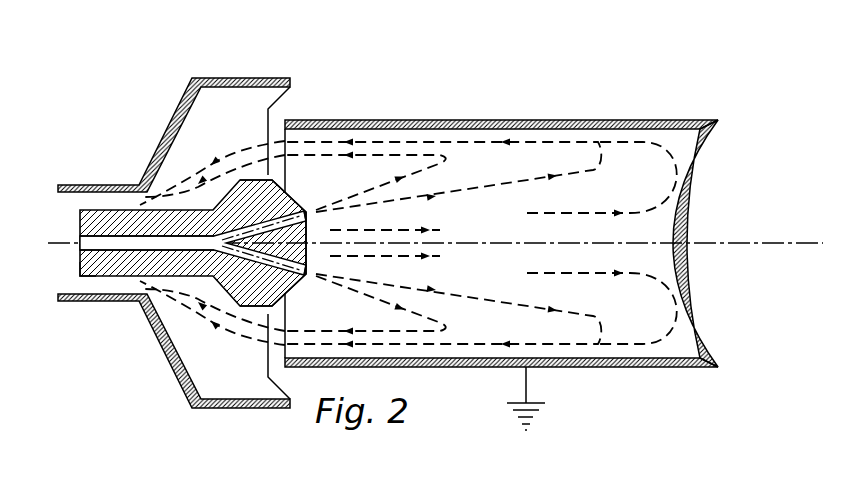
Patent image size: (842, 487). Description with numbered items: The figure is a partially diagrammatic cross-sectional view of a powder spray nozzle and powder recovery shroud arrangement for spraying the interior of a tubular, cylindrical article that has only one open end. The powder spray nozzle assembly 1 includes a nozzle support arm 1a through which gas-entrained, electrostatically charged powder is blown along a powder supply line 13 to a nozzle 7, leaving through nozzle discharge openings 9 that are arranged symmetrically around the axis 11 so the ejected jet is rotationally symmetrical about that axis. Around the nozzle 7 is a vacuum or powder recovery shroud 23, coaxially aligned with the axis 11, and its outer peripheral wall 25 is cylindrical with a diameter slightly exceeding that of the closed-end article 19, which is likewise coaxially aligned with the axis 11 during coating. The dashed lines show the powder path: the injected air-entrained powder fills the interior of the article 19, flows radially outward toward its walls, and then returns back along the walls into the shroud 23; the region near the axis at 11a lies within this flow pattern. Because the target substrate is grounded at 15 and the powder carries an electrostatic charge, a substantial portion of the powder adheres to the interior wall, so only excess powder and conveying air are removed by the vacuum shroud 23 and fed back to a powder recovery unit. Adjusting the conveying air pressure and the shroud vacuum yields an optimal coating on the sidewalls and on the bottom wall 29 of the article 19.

The powder spray nozzle assembly 1 is at (214, 295).
The nozzle support arm 1a is at (90, 276).
The nozzle 7 is at (306, 211).
The nozzle discharge openings 9 is at (314, 210).
The axis 11 is at (58, 240).
The gas flow streams 11a is at (465, 243).
The powder supply line 13 is at (130, 230).
The ground 15 is at (545, 403).
The closed-end article 19 is at (562, 120).
The vacuum or powder recovery shroud 23 is at (222, 70).
The outer peripheral wall 25 is at (220, 410).
The bottom wall 29 is at (688, 207).